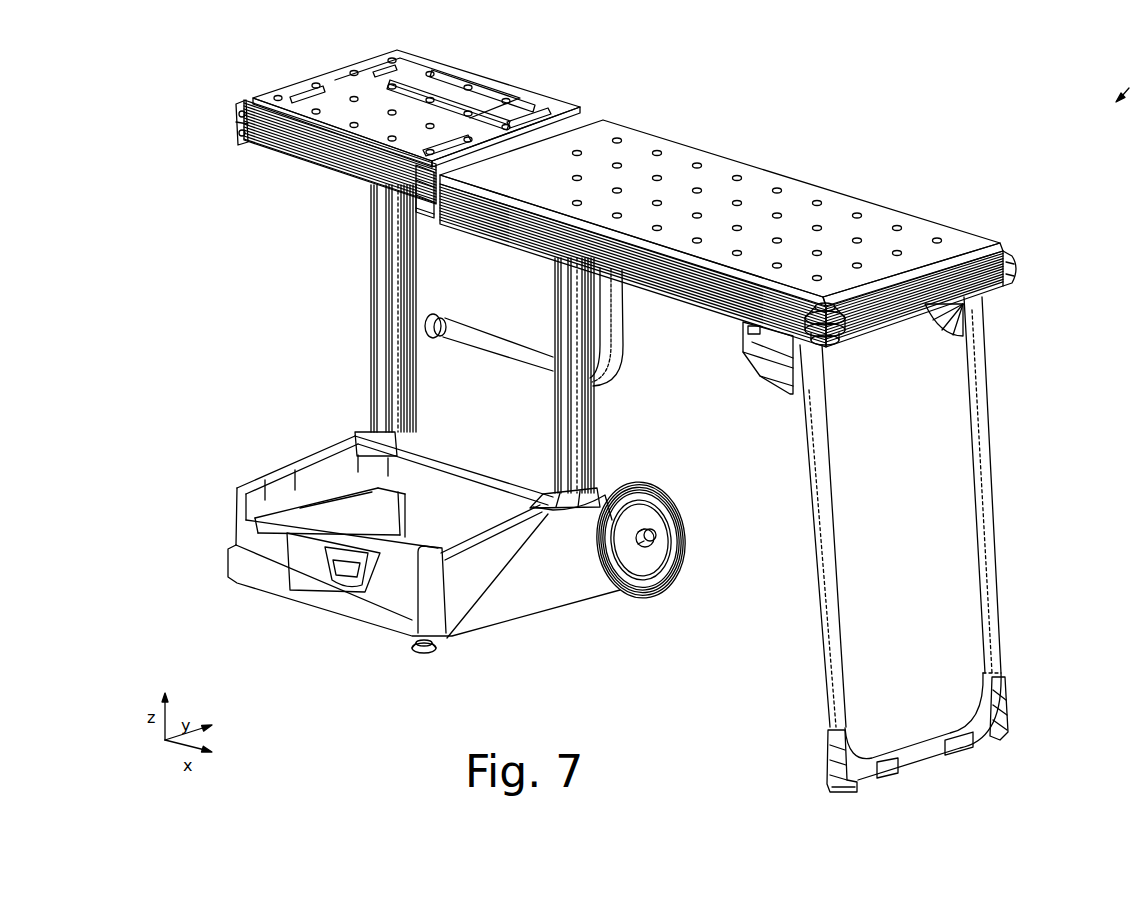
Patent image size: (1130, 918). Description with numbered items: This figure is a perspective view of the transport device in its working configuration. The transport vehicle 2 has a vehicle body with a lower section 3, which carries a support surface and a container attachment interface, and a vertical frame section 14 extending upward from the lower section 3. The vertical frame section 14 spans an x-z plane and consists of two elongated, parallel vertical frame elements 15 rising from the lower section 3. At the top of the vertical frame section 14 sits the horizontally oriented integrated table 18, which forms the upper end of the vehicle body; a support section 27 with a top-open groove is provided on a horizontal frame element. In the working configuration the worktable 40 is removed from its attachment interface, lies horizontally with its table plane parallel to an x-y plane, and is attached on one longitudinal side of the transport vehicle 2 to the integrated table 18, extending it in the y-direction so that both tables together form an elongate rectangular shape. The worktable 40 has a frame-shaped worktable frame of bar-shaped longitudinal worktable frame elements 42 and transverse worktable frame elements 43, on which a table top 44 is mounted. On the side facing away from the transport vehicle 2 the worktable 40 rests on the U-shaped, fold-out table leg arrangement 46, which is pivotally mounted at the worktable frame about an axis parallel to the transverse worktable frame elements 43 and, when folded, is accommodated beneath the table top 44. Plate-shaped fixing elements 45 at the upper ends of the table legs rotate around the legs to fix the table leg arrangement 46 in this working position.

The transport vehicle 2 is at (185, 150).
The lower section 3 is at (200, 518).
The vertical frame section 14 is at (356, 358).
The vertical frame elements 15 is at (593, 428).
The integrated table 18 is at (265, 100).
The support section 27 is at (318, 160).
The worktable 40 is at (1048, 256).
The longitudinal worktable frame elements 42 is at (710, 323).
The transverse worktable frame elements 43 is at (875, 337).
The table top 44 is at (798, 188).
The fixing elements 45 is at (778, 373).
The table leg arrangement 46 is at (985, 500).